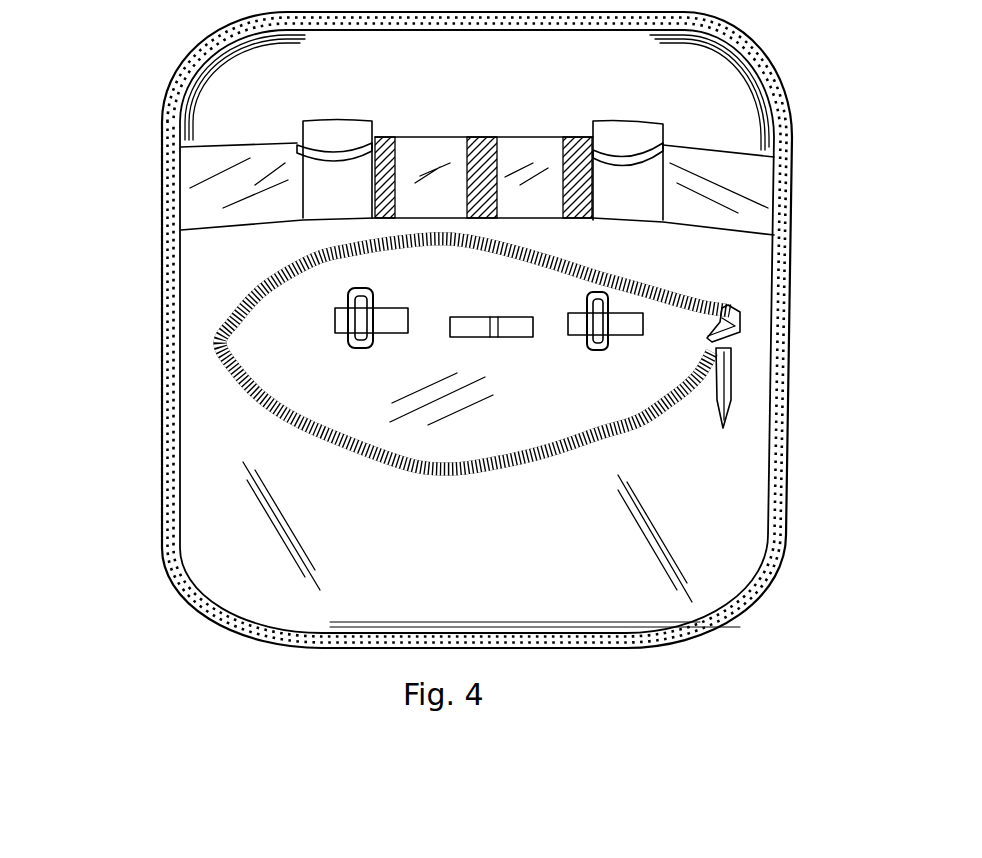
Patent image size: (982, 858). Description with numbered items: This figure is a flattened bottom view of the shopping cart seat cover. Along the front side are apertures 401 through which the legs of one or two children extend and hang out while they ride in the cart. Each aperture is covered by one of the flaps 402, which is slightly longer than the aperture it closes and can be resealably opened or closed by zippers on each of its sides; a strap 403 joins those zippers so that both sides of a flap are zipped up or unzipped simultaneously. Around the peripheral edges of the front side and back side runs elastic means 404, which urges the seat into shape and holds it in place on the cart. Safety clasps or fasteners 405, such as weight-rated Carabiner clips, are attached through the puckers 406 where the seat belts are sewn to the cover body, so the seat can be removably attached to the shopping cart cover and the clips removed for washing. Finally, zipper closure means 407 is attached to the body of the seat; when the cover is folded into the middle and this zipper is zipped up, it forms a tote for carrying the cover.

The apertures 401 is at (533, 150).
The flaps 402 is at (632, 135).
The strap 403 is at (633, 155).
The elastic means 404 is at (180, 87).
The safety clasps or fasteners 405 is at (618, 310).
The puckers 406 is at (615, 314).
The zipper closure means 407 is at (663, 420).